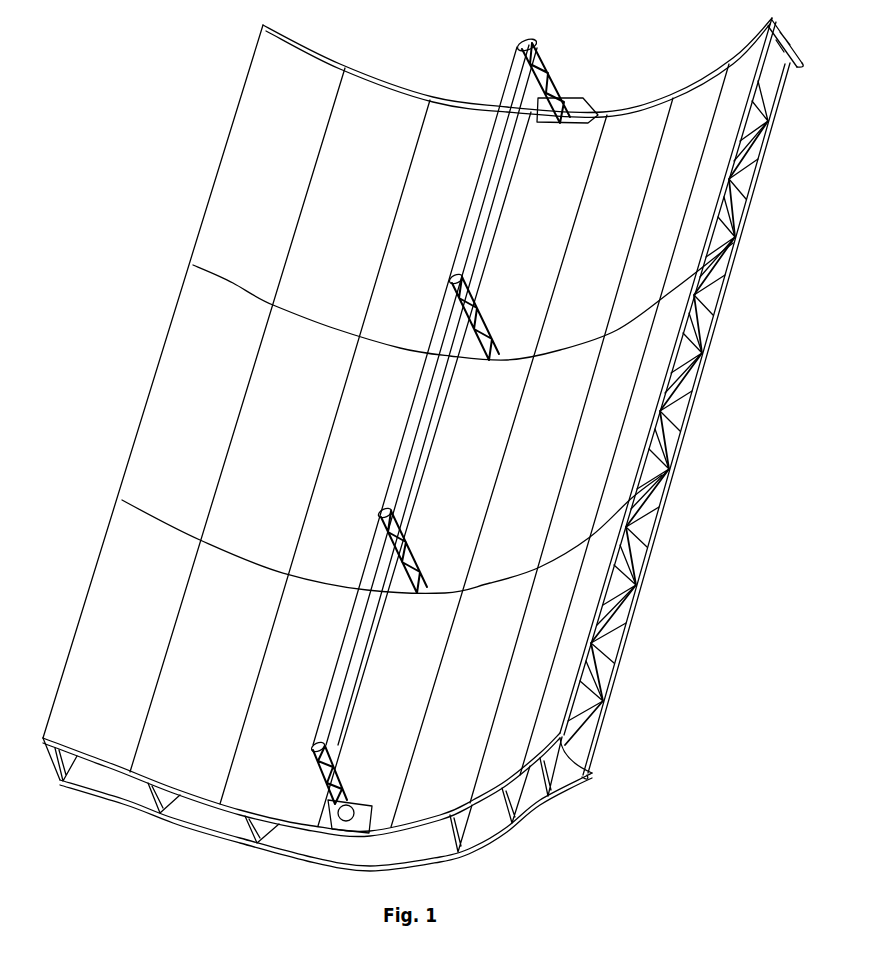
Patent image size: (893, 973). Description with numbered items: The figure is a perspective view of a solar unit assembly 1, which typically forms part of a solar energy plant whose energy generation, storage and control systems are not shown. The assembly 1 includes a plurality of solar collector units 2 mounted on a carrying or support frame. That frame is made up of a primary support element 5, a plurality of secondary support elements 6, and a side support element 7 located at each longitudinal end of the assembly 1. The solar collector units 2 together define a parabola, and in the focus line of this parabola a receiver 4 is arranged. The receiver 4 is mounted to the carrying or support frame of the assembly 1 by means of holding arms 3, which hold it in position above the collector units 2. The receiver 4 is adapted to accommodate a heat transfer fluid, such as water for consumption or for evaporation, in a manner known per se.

The solar unit assembly 1 is at (163, 52).
The solar collector unit 2 is at (98, 620).
The holding arm 3 is at (545, 57).
The receiver 4 is at (507, 83).
The primary support element 5 is at (400, 845).
The secondary support element 6 is at (475, 825).
The side support element 7 is at (587, 792).